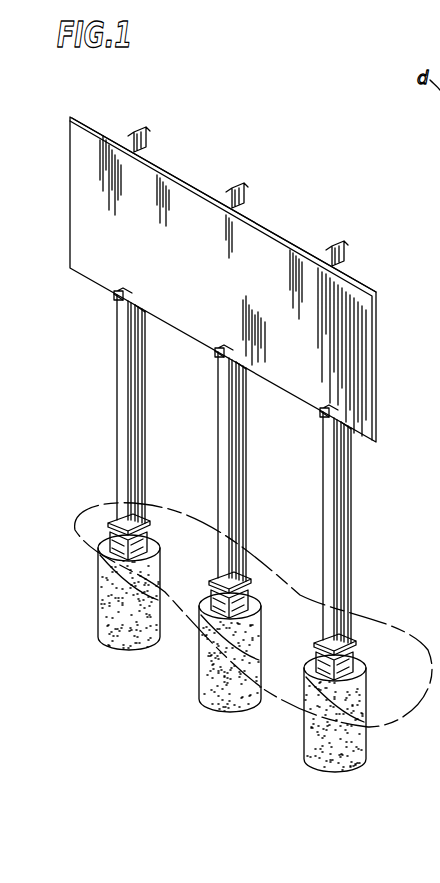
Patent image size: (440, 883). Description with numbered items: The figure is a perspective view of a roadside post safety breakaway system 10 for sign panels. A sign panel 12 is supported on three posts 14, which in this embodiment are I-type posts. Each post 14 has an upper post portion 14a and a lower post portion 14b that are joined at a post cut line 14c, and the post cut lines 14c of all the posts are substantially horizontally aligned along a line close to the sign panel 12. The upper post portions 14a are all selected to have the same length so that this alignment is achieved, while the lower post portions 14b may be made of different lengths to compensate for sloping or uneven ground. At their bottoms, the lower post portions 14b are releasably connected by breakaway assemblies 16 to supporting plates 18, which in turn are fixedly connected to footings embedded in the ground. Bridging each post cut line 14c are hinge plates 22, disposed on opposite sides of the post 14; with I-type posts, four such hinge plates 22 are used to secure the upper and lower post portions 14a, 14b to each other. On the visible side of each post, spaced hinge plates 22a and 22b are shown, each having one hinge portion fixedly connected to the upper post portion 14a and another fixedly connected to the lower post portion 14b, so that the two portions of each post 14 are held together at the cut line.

The roadside post safety breakaway system 10 is at (127, 678).
The sign panel 12 is at (64, 245).
The post 14 is at (223, 448).
The upper post portion 14a is at (143, 130).
The lower post portion 14b is at (116, 410).
The post cut line 14c is at (123, 296).
The breakaway assembly 16 is at (209, 643).
The supporting plate 18 is at (151, 559).
The hinge plate 22 is at (439, 143).
The hinge plate 22a is at (118, 299).
The hinge plate 22b is at (140, 311).